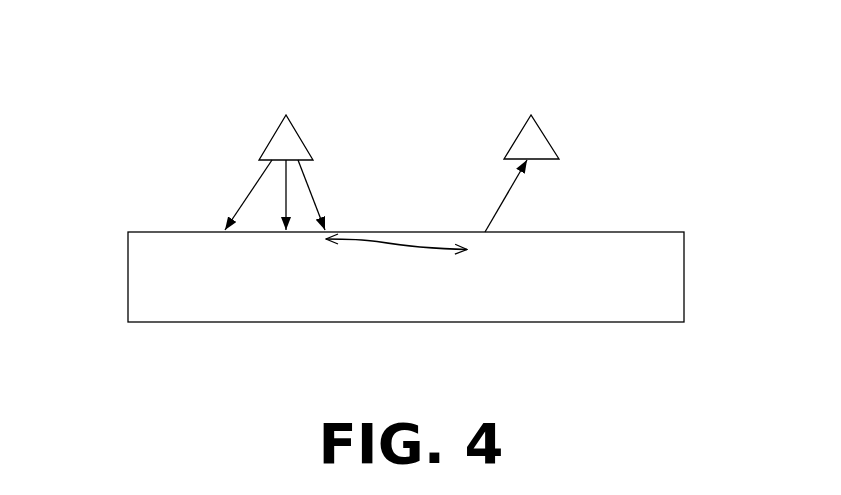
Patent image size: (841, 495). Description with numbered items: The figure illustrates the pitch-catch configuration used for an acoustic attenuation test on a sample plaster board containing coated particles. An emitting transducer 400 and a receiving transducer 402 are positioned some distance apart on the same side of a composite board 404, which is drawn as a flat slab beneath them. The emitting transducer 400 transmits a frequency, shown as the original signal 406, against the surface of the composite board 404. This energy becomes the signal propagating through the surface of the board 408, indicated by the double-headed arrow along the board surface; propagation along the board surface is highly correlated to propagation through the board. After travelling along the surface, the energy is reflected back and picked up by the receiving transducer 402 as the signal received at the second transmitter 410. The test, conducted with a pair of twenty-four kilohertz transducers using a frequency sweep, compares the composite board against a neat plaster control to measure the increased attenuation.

The emitting transducer 400 is at (295, 148).
The receiving transducer 402 is at (544, 150).
The composite board 404 is at (638, 250).
The original signal 406 is at (238, 195).
The signal propagating through the surface of the board 408 is at (377, 240).
The signal received at the second transmitter 410 is at (505, 207).